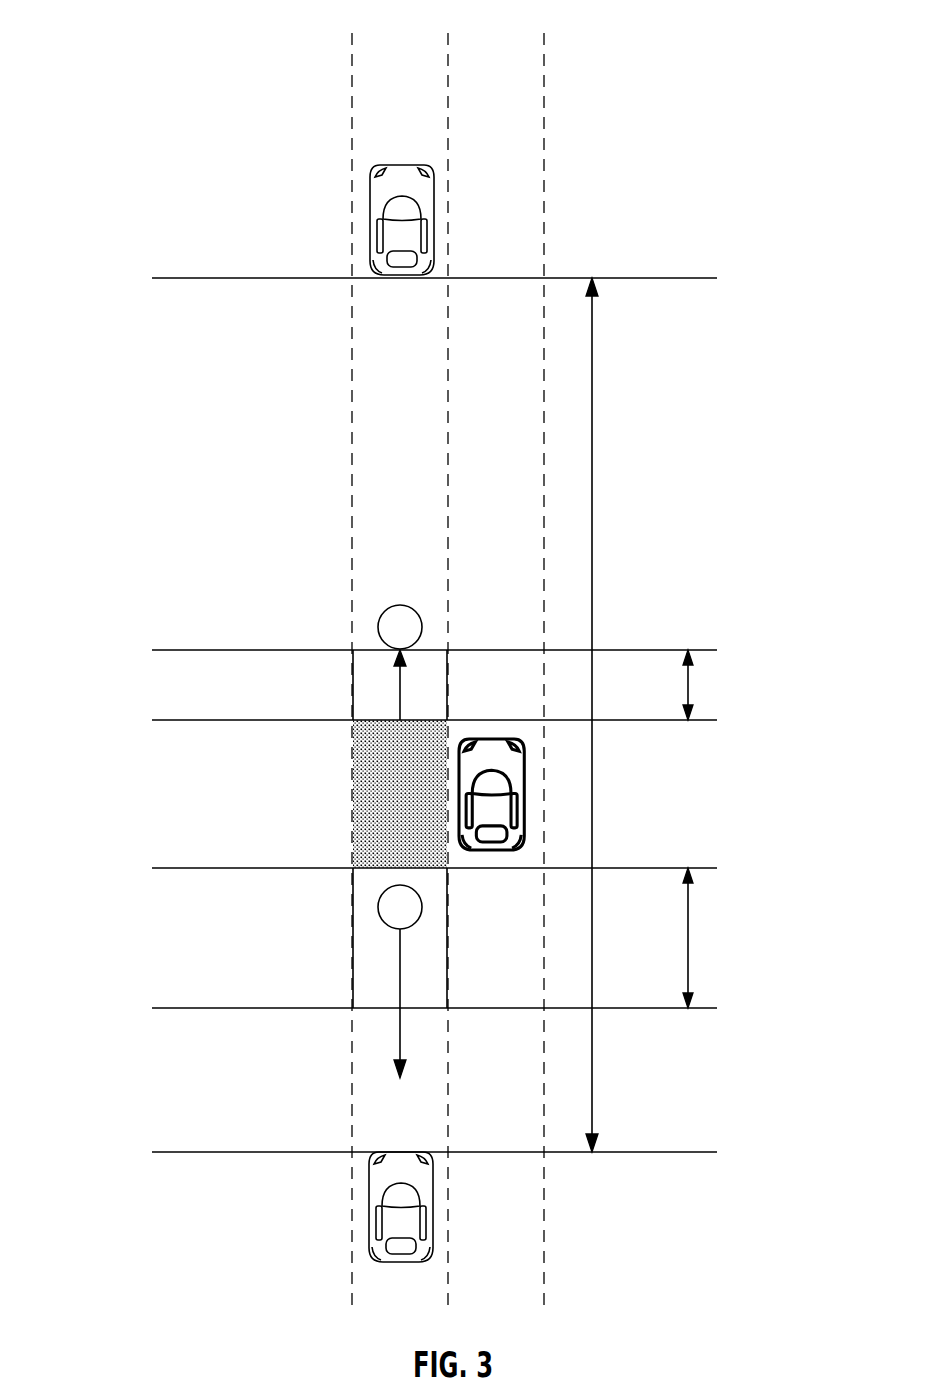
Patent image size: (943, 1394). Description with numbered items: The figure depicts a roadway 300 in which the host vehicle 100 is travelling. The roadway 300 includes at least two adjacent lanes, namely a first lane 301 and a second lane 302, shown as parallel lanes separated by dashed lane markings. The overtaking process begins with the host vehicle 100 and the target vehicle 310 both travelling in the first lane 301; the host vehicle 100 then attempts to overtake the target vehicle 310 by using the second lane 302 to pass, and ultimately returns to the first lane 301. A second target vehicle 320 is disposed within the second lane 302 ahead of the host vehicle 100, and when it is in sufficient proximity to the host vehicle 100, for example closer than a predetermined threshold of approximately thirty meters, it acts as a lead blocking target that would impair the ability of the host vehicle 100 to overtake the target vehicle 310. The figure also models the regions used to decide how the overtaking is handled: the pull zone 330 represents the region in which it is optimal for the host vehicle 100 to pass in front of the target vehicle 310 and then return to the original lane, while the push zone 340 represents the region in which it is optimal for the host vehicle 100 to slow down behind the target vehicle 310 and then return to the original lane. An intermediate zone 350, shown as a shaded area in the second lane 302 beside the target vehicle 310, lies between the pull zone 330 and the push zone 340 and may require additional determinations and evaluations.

The roadway 300 is at (255, 46).
The host vehicle 100 is at (369, 1200).
The target vehicle 310 is at (526, 800).
The second target vehicle 320 is at (370, 214).
The pull zone 330 is at (142, 681).
The push zone 340 is at (142, 926).
The intermediate zone 350 is at (356, 793).
The first lane 301 is at (520, 1313).
The second lane 302 is at (420, 1313).